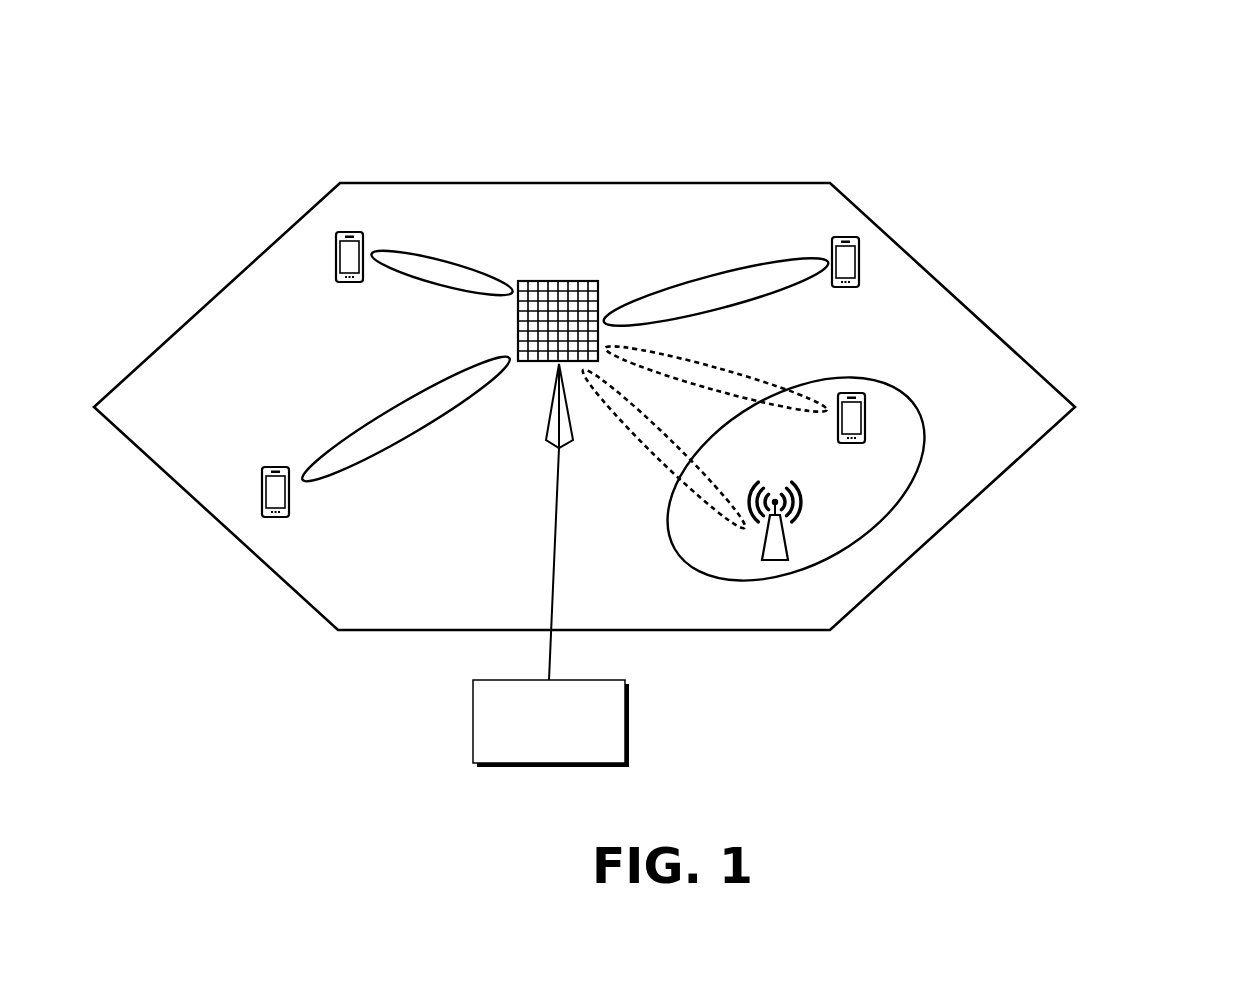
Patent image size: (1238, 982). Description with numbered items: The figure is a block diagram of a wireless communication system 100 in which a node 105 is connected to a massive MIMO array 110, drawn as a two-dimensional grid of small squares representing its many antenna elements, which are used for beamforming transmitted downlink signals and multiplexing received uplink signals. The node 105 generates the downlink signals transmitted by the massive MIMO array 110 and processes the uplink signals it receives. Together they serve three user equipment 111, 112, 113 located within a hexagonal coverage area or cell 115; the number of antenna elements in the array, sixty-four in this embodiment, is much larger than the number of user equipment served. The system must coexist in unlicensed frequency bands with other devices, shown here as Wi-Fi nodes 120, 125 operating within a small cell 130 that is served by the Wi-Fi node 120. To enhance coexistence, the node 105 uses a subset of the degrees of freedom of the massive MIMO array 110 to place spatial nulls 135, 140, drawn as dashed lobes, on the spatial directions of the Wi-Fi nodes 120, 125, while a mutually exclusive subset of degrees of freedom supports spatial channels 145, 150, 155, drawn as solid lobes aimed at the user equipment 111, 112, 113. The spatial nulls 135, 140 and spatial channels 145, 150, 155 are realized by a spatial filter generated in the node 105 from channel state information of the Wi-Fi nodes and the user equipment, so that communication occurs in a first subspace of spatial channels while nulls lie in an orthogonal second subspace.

The wireless communication system 100 is at (1126, 80).
The node 105 is at (551, 607).
The massive MIMO array 110 is at (559, 281).
The user equipment 111 is at (348, 284).
The user equipment 112 is at (275, 466).
The user equipment 113 is at (845, 289).
The coverage area or cell 115 is at (948, 290).
The Wi-Fi node 120 is at (775, 561).
The Wi-Fi node 125 is at (866, 407).
The small cell 130 is at (926, 440).
The spatial null 135 is at (652, 457).
The spatial null 140 is at (710, 368).
The spatial channel 145 is at (460, 294).
The spatial channel 150 is at (397, 440).
The spatial channel 155 is at (722, 276).